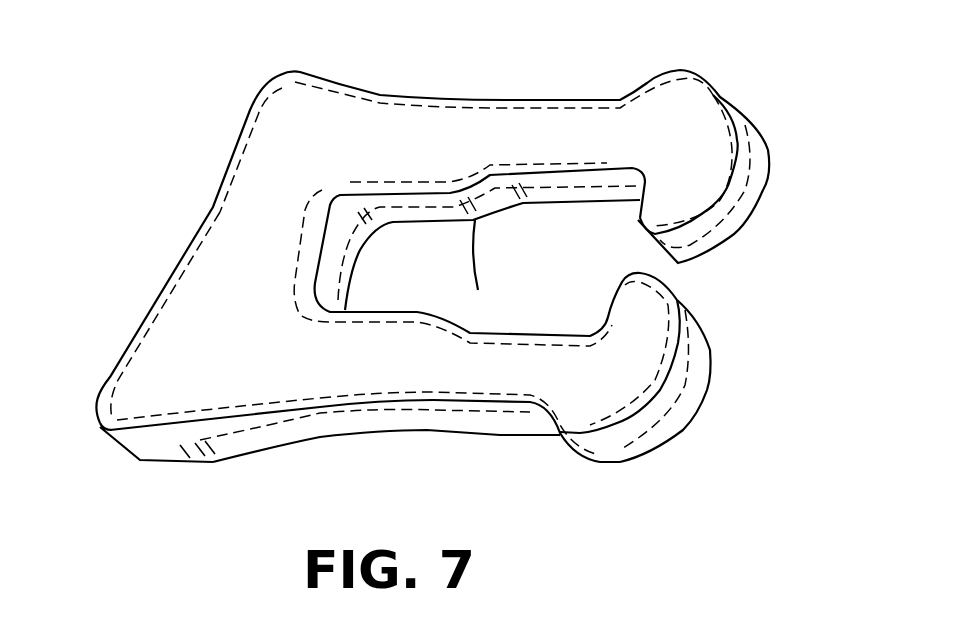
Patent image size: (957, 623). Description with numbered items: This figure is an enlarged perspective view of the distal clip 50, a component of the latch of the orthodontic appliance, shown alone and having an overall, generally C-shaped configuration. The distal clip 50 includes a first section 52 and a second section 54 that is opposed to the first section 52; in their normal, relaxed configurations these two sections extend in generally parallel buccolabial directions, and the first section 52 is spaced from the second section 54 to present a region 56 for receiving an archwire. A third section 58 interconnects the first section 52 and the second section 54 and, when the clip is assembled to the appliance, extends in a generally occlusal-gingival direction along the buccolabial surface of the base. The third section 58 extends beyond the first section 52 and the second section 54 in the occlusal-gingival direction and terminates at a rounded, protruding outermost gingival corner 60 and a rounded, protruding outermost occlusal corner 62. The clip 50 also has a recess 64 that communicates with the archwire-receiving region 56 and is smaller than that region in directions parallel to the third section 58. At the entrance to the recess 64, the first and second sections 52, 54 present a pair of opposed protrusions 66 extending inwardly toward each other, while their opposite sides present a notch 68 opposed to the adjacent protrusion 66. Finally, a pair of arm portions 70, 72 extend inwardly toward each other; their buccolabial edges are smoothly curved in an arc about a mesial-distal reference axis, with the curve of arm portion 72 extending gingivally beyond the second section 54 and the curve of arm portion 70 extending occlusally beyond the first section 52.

The distal clip 50 is at (593, 78).
The first section 52 is at (420, 367).
The second section 54 is at (505, 100).
The region 56 is at (557, 202).
The third section 58 is at (230, 233).
The gingival corner 60 is at (275, 78).
The occlusal corner 62 is at (100, 425).
The recess 64 is at (320, 303).
The protrusions 66 is at (423, 312).
The notch 68 is at (413, 97).
The arm portion 70 is at (683, 393).
The arm portion 72 is at (697, 108).